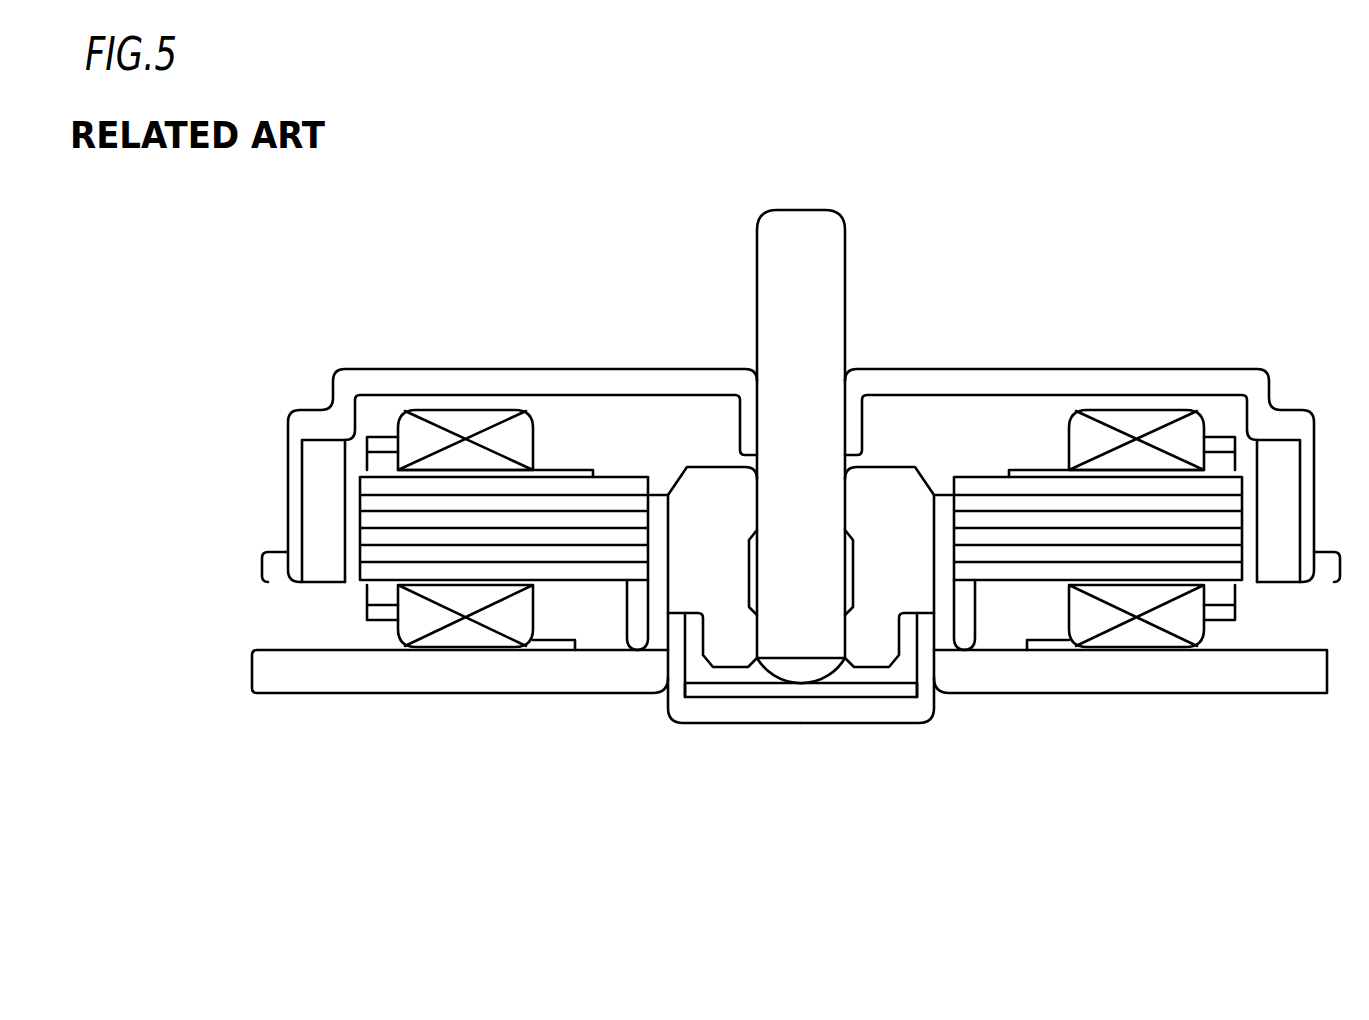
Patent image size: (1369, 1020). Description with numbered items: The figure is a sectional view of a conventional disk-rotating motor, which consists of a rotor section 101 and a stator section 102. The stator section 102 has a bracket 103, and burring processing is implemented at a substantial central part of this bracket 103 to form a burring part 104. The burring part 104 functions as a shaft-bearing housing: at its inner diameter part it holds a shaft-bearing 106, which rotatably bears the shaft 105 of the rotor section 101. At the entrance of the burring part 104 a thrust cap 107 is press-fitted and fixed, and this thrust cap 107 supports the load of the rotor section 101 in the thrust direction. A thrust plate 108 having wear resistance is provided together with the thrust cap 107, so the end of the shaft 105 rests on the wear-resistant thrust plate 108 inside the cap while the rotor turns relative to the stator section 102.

The rotor section 101 is at (380, 367).
The stator section 102 is at (972, 707).
The bracket 103 is at (1112, 672).
The burring part 104 is at (657, 595).
The shaft 105 is at (800, 265).
The shaft-bearing 106 is at (705, 490).
The thrust cap 107 is at (805, 710).
The thrust plate 108 is at (727, 688).